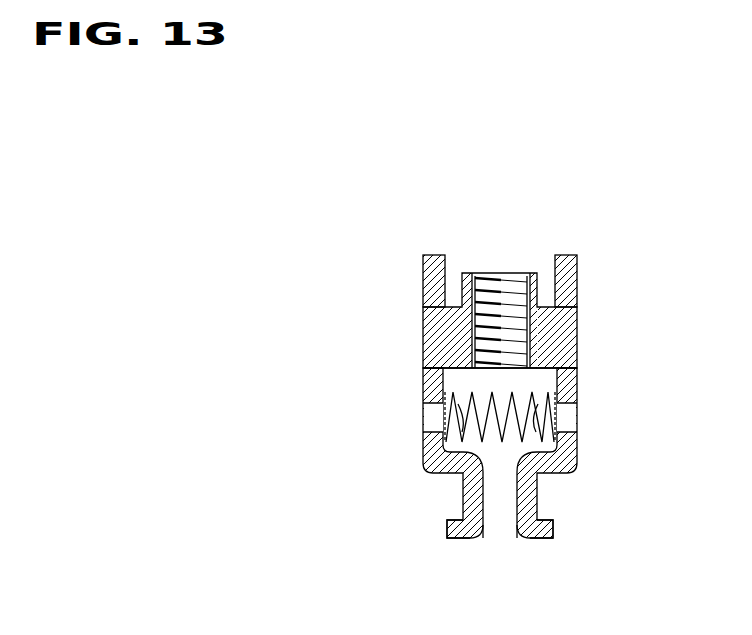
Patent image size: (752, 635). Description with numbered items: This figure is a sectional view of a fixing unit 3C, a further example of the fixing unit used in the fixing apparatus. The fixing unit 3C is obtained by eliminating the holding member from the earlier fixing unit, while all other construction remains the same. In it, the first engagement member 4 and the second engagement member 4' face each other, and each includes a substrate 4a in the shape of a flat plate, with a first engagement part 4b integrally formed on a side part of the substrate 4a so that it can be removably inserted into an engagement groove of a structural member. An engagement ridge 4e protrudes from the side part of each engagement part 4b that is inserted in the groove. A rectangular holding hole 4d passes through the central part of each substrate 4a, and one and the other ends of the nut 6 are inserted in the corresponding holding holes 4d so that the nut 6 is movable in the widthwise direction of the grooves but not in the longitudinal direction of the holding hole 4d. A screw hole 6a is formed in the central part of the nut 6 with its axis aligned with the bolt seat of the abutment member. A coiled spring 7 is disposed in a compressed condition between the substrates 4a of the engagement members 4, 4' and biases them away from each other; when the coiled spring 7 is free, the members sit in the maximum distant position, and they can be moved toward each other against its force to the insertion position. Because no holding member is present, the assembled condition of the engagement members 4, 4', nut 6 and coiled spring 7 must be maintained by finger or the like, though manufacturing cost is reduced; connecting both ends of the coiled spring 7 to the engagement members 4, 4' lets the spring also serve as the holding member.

The fixing unit 3C is at (502, 377).
The first engagement member 4 is at (502, 425).
The second engagement member 4' is at (595, 453).
The substrate 4a is at (440, 384).
The first engagement part 4b is at (524, 528).
The holding hole 4d is at (426, 318).
The engagement ridge 4e is at (447, 527).
The nut 6 is at (447, 343).
The screw hole 6a is at (527, 337).
The coiled spring 7 is at (505, 390).